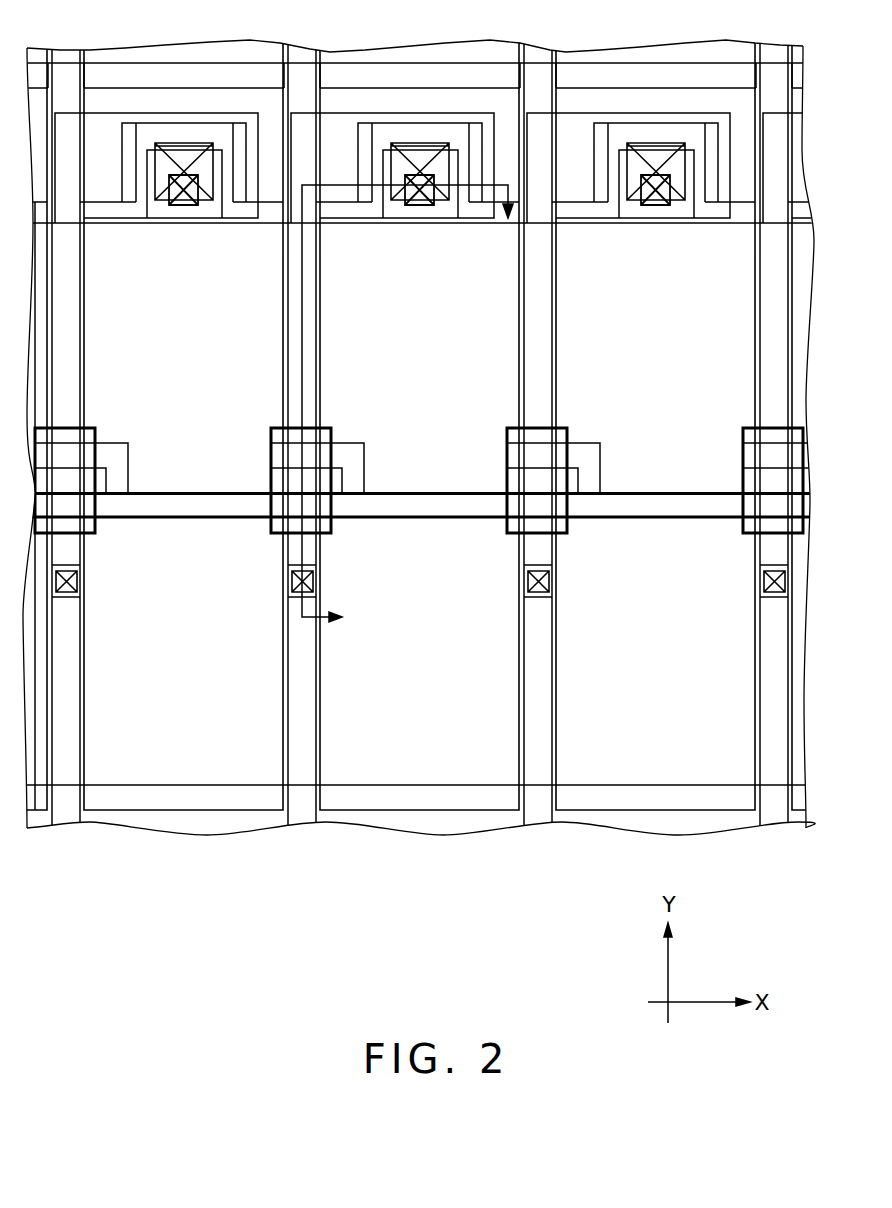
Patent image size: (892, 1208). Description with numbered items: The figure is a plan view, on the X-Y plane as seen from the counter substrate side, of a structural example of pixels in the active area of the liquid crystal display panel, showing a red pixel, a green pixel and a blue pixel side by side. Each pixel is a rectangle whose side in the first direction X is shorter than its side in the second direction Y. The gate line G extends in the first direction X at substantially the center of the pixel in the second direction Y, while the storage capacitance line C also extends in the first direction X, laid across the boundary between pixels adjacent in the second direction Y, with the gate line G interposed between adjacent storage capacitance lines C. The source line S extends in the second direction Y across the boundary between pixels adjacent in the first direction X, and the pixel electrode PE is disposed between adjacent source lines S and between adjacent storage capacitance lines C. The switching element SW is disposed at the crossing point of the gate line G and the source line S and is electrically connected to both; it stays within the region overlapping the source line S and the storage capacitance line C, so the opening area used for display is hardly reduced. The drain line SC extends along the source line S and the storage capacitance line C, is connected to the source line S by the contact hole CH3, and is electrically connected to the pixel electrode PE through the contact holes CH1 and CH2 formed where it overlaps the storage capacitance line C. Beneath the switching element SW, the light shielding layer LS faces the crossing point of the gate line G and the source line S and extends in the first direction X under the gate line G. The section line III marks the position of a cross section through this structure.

The source line S is at (67, 58).
The drain line SC is at (114, 110).
The storage capacitance line C is at (170, 62).
The contact hole CH1 is at (183, 206).
The contact hole CH2 is at (185, 141).
The contact hole CH3 is at (83, 579).
The light shielding layer LS is at (92, 427).
The switching element SW is at (136, 414).
The gate line G is at (194, 491).
The pixel electrode PE is at (152, 811).
The section line III- III is at (409, 408).